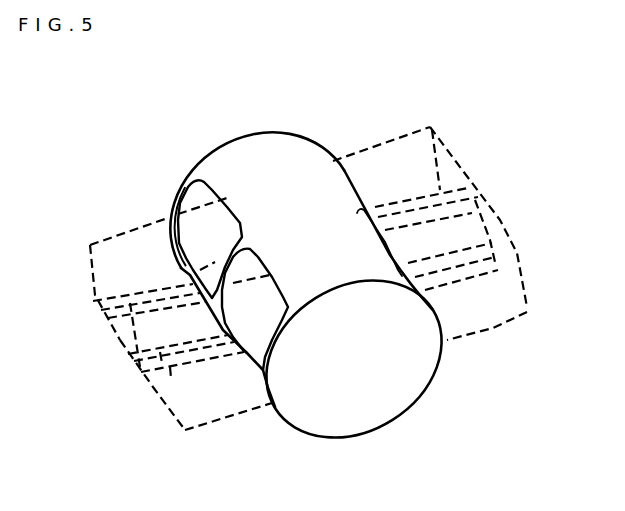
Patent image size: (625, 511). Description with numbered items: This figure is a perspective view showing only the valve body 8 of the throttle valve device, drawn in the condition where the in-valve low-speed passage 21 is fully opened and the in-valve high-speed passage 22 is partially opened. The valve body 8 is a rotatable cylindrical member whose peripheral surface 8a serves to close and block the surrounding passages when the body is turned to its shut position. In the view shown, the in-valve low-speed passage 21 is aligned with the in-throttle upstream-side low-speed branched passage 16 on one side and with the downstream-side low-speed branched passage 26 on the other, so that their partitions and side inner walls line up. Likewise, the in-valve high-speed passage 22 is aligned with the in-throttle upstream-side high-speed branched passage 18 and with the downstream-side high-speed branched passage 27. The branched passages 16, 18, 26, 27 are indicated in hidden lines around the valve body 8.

The valve body 8 is at (301, 284).
The peripheral surface 8a is at (296, 161).
The in-throttle upstream-side low-speed branched passage 16 is at (490, 328).
The in-throttle upstream-side high-speed branched passage 18 is at (398, 132).
The in-valve low-speed passage 21 is at (261, 317).
The in-valve high-speed passage 22 is at (200, 210).
The downstream-side low-speed branched passage 26 is at (153, 396).
The downstream-side high-speed branched passage 27 is at (100, 237).